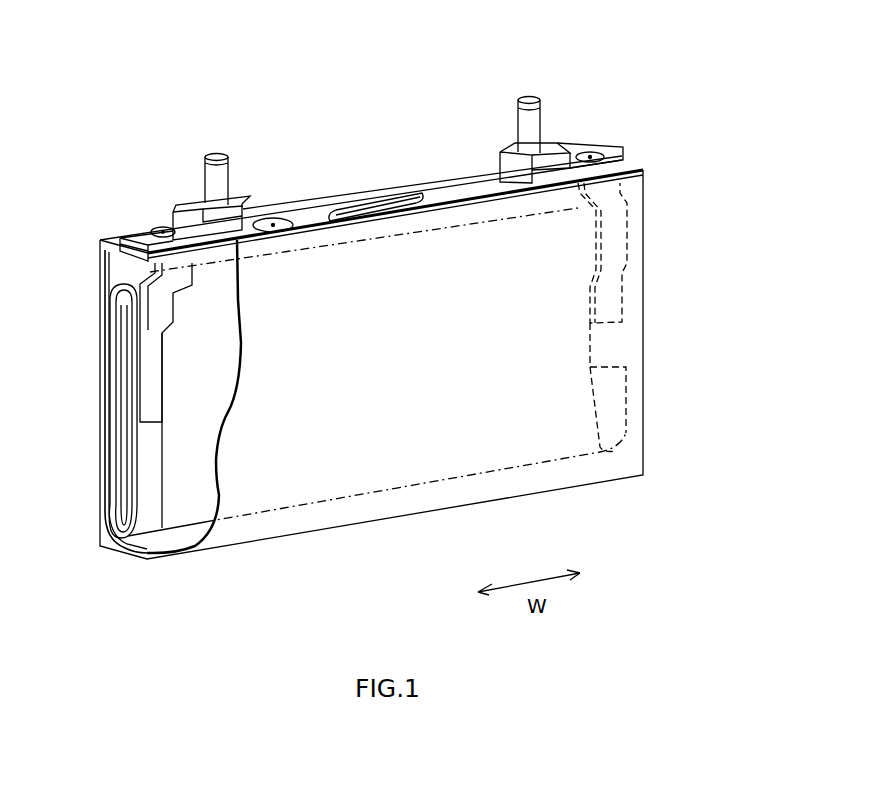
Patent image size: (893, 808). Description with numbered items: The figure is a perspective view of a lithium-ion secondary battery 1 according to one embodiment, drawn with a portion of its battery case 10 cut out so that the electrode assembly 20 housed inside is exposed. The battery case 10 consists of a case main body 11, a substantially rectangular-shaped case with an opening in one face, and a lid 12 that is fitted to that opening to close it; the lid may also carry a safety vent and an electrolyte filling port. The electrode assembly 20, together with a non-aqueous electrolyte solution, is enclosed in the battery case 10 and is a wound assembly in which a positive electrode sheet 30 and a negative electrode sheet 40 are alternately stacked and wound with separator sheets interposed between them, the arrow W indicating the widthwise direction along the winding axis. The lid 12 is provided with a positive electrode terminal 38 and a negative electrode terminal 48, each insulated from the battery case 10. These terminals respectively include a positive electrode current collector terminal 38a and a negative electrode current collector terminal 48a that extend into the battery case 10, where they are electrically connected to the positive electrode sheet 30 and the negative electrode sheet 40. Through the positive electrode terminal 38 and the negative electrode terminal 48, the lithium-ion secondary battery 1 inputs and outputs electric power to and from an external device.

The lithium-ion secondary battery 1 is at (112, 103).
The battery case 10 is at (722, 144).
The case main body 11 is at (640, 199).
The lid 12 is at (636, 165).
The electrode assembly 20 is at (568, 374).
The positive electrode sheet 30 is at (148, 463).
The positive electrode terminal 38 is at (217, 152).
The positive electrode current collector terminal 38a is at (150, 382).
The negative electrode sheet 40 is at (610, 416).
The negative electrode terminal 48 is at (528, 100).
The negative electrode current collector terminal 48a is at (608, 303).